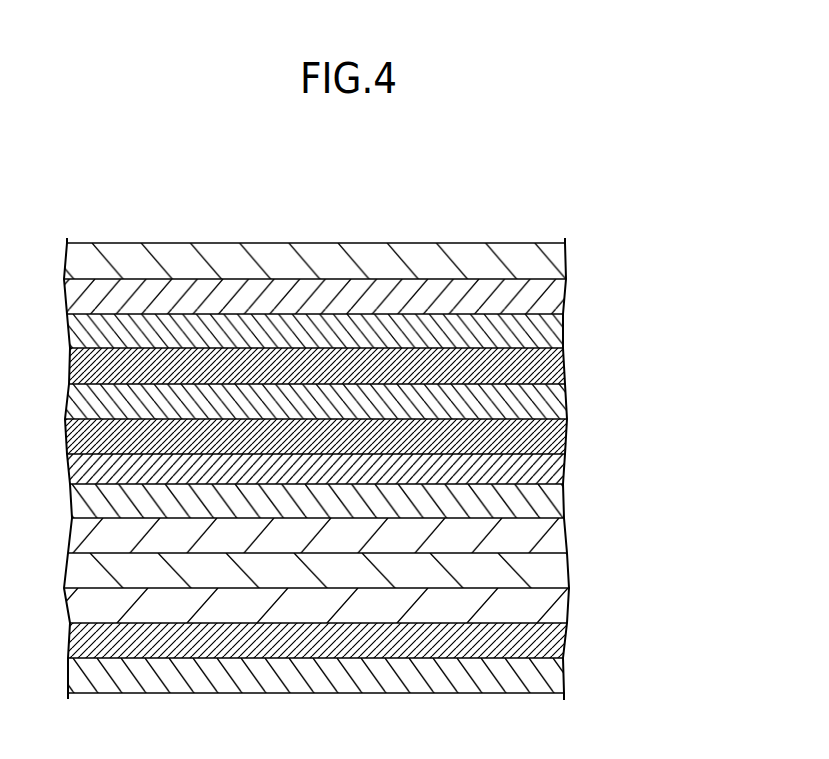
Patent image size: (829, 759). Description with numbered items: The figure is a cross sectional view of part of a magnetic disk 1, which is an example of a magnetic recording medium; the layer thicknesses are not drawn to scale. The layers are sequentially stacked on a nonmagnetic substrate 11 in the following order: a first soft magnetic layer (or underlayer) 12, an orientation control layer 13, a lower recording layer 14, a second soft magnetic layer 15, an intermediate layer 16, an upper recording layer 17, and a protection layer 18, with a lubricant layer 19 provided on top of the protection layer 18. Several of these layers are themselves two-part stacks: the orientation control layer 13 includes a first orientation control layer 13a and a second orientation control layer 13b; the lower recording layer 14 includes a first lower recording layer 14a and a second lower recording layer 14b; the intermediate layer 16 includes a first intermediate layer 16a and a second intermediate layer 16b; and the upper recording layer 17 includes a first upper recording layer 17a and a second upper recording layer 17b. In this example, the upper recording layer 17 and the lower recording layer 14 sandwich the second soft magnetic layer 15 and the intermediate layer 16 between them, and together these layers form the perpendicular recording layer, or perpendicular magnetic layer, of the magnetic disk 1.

The magnetic disk 1 is at (539, 193).
The nonmagnetic substrate 11 is at (554, 676).
The first soft magnetic layer 12 is at (556, 641).
The orientation control layer 13 is at (379, 588).
The first orientation control layer 13a is at (552, 606).
The second orientation control layer 13b is at (552, 571).
The lower recording layer 14 is at (381, 519).
The first lower recording layer 14a is at (552, 537).
The second lower recording layer 14b is at (553, 500).
The second soft magnetic layer 15 is at (554, 465).
The intermediate layer 16 is at (380, 419).
The first intermediate layer 16a is at (556, 436).
The second intermediate layer 16b is at (553, 400).
The upper recording layer 17 is at (381, 349).
The first upper recording layer 17a is at (555, 366).
The second upper recording layer 17b is at (553, 330).
The protection layer 18 is at (550, 296).
The lubricant layer 19 is at (550, 258).